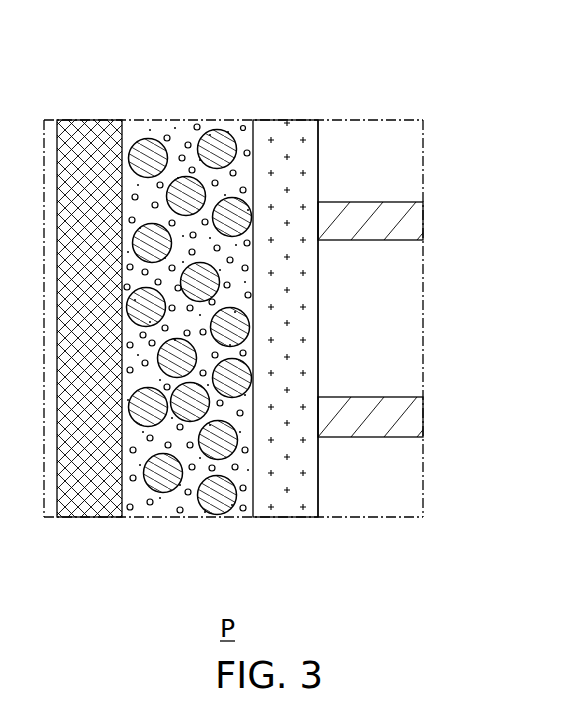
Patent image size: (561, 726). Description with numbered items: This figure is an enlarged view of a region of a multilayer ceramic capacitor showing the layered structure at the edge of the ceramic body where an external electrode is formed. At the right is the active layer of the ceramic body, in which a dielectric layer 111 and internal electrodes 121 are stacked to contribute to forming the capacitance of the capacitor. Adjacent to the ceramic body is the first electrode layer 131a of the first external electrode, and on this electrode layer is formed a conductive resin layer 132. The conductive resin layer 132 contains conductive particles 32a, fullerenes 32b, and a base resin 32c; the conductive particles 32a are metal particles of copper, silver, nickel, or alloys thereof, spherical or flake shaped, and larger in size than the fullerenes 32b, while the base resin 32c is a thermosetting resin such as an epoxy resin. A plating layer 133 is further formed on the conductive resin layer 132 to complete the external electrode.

The conductive resin layer 132 is at (288, 57).
The conductive particle 32a is at (140, 141).
The fullerene 32b is at (197, 124).
The base resin 32c is at (237, 127).
The plating layer 133 is at (98, 504).
The first electrode layer 131a is at (295, 498).
The dielectric layer 111 is at (392, 320).
The internal electrode 121 is at (392, 222).